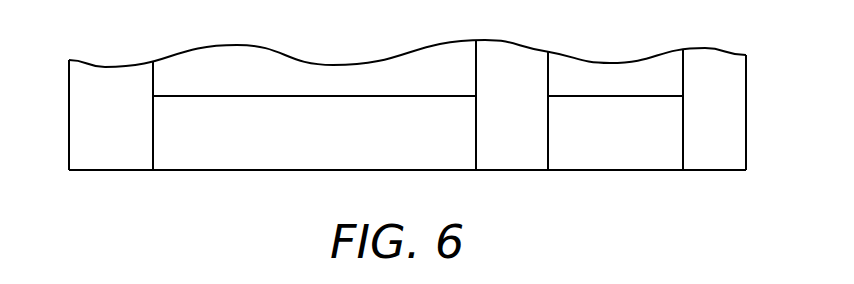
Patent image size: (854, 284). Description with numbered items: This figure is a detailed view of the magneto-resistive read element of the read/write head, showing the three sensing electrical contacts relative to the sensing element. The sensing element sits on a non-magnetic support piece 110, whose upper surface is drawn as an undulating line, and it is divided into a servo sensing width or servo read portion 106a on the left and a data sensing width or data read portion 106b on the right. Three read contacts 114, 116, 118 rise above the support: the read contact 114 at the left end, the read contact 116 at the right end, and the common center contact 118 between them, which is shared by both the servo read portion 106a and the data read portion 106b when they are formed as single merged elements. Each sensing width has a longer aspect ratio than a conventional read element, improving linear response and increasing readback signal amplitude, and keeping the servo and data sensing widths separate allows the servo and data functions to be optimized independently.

The servo read portion 106a is at (227, 162).
The data read portion 106b is at (624, 158).
The non-magnetic support piece 110 is at (330, 73).
The read contact 114 is at (112, 75).
The read contact 116 is at (712, 60).
The common center contact 118 is at (513, 53).